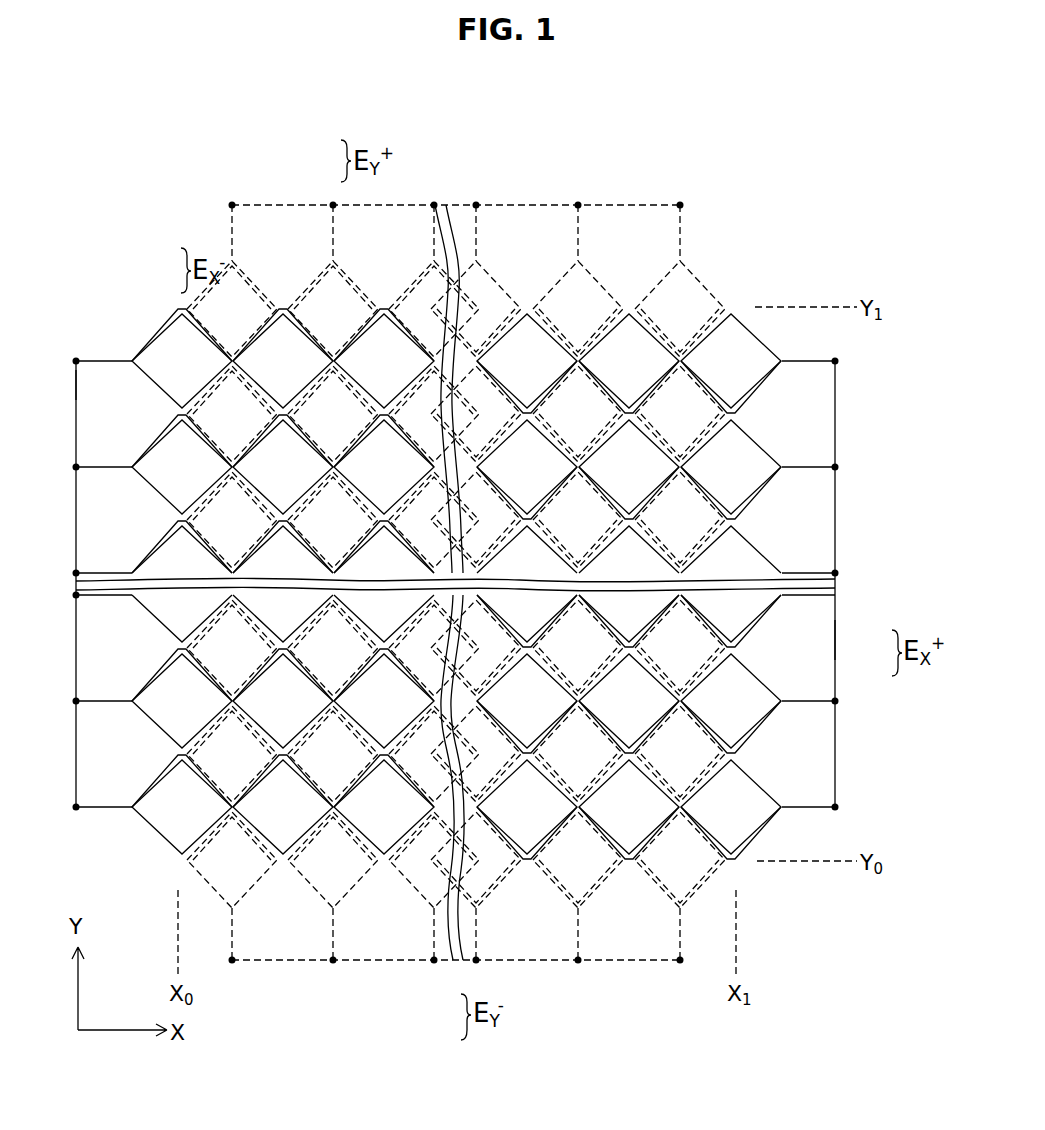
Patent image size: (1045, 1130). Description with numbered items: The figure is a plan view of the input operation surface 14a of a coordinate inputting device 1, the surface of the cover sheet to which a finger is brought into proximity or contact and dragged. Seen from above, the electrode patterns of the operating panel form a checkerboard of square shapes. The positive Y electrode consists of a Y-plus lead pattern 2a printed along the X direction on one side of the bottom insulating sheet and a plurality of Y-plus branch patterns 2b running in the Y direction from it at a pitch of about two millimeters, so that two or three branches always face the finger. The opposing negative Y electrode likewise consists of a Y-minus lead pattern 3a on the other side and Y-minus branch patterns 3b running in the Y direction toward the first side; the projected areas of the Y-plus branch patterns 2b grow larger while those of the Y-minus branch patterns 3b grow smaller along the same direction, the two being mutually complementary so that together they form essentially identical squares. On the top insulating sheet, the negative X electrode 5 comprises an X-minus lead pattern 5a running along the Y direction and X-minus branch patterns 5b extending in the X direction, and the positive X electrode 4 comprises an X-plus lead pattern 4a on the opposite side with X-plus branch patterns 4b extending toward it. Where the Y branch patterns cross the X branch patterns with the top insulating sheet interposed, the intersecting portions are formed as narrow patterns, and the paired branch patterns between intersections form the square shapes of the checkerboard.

The coordinate inputting device 1 is at (623, 145).
The Y+ lead pattern 2a is at (250, 283).
The Y+ branch patterns 2b is at (270, 298).
The Y− lead pattern 3a is at (337, 877).
The Y− branch patterns 3b is at (345, 890).
The X electrode first layer 4 is at (386, 303).
The X electrode second layer 5 is at (393, 355).
The X− lead pattern 5a is at (77, 393).
The X− branch patterns 5b is at (165, 358).
The X+ lead pattern 4a is at (836, 638).
The X+ branch patterns 4b is at (752, 699).
The input operation surface 14a is at (601, 299).